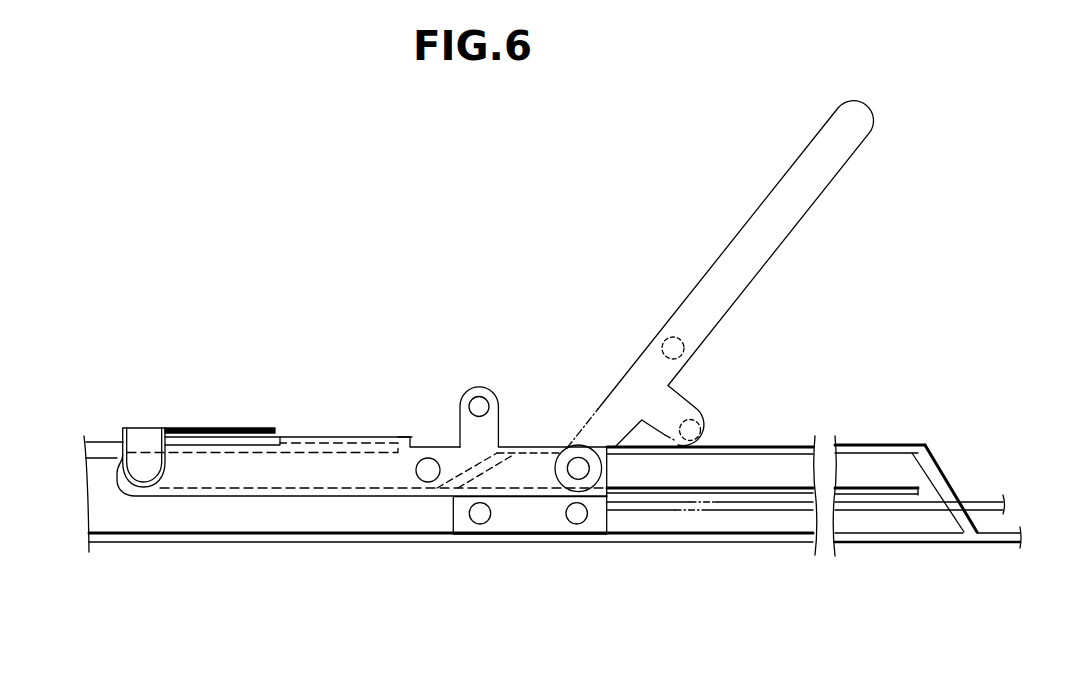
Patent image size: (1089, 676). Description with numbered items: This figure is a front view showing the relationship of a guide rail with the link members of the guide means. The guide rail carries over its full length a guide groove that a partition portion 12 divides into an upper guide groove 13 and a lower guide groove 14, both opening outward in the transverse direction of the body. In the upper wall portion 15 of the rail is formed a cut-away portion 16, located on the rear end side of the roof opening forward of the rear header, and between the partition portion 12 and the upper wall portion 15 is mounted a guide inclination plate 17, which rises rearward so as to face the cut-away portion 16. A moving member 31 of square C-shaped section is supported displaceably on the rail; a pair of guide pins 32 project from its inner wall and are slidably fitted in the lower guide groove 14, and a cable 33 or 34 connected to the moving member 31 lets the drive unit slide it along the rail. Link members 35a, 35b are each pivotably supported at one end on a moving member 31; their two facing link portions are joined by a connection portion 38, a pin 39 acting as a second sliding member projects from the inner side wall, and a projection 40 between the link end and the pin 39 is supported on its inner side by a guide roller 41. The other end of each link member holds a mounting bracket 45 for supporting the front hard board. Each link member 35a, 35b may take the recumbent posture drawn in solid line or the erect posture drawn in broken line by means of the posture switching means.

The partition portion 12 is at (911, 483).
The upper guide groove 13 is at (757, 467).
The lower guide groove 14 is at (775, 523).
The upper wall portion 15 is at (798, 447).
The cut-away portion 16 is at (398, 437).
The guide inclination plate 17 is at (515, 453).
The moving member 31 is at (597, 520).
The guide pins 32 is at (567, 518).
The cable 33 is at (842, 472).
The cable 34 is at (978, 500).
The link member 35a is at (833, 185).
The link member 35b is at (263, 465).
The connection portion 38 is at (317, 437).
The pin 39 is at (429, 458).
The projection 40 is at (483, 388).
The guide roller 41 is at (484, 404).
The mounting bracket 45 is at (190, 428).